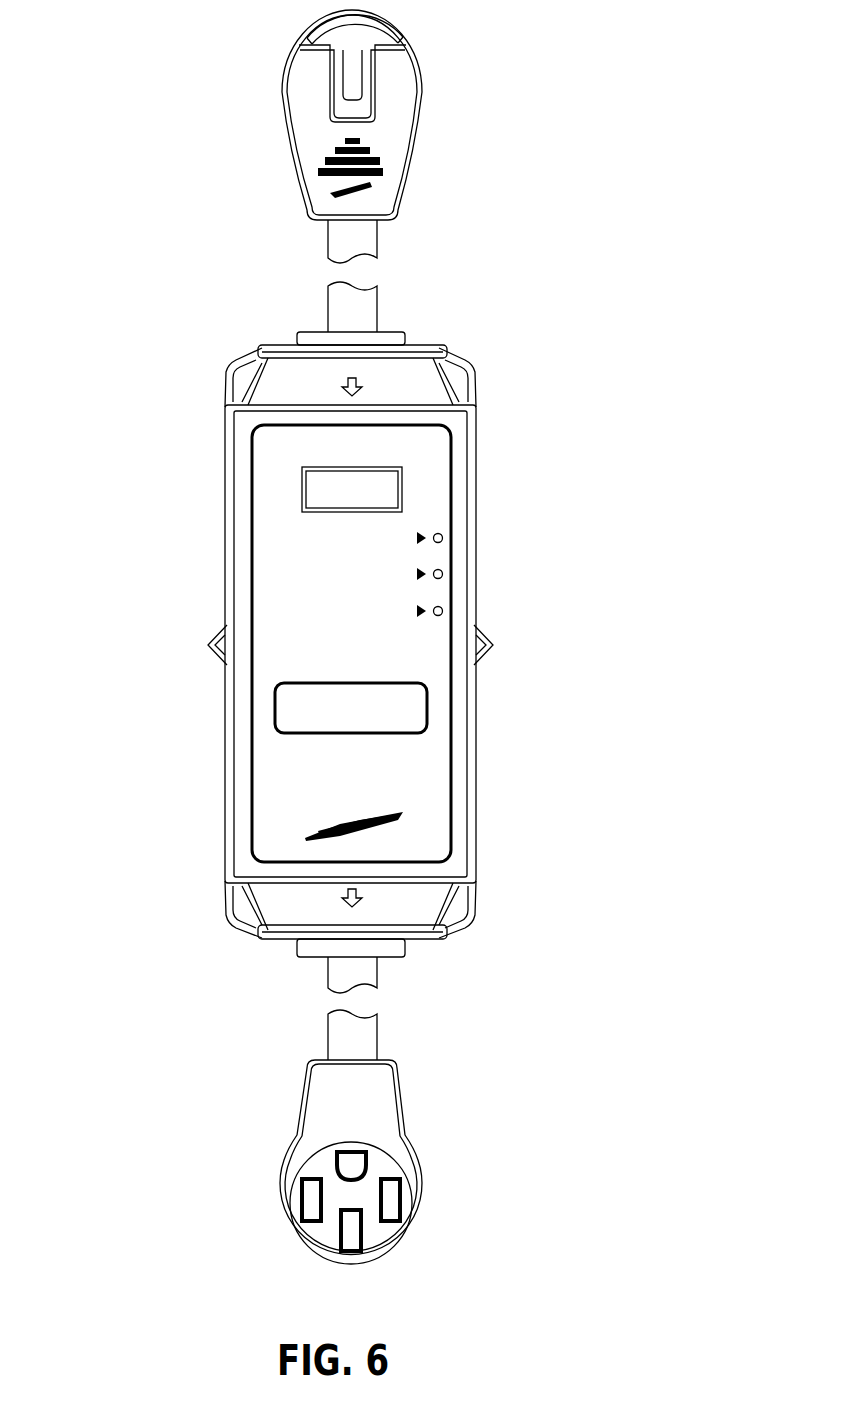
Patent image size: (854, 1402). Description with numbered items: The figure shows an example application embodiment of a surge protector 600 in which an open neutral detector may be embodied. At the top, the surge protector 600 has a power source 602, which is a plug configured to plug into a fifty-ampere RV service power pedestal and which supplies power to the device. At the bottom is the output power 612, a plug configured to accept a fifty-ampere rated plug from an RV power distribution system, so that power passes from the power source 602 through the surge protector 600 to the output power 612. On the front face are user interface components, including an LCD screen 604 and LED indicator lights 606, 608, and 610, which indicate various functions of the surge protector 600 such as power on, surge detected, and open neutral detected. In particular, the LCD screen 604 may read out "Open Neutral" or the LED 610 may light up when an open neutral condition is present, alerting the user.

The surge protector 600 is at (295, 637).
The power source 602 is at (410, 101).
The LCD screen 604 is at (352, 489).
The LED indicator light 606 is at (447, 522).
The LED indicator light 608 is at (447, 560).
The LED indicator light 610 is at (447, 617).
The output power 612 is at (378, 1135).